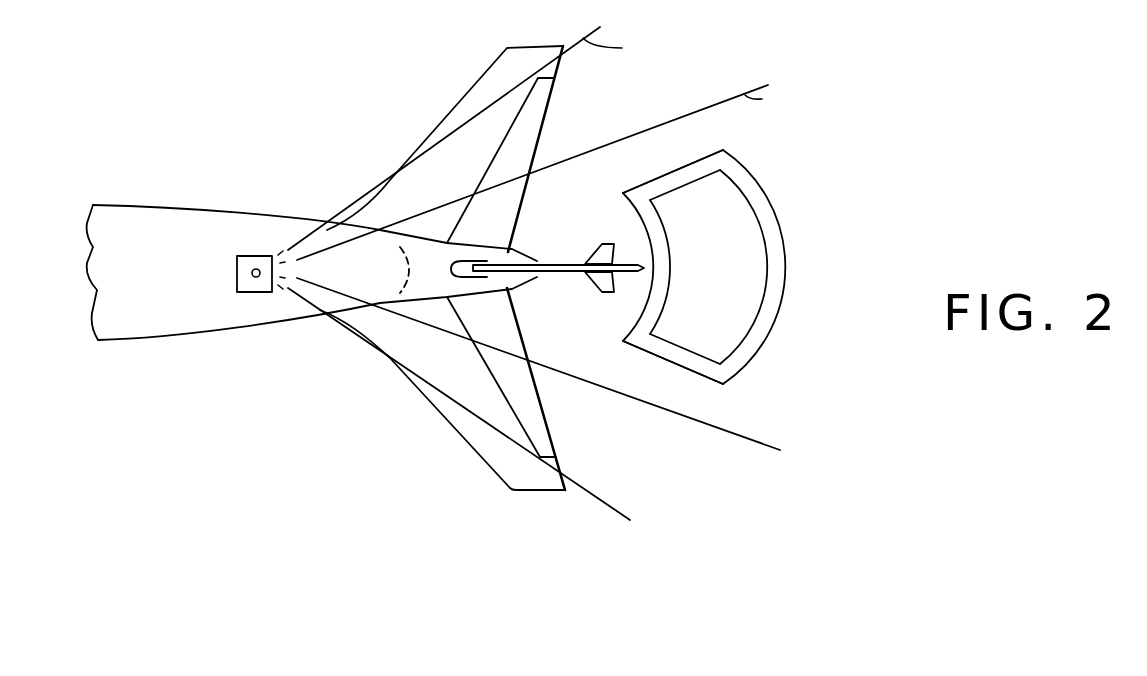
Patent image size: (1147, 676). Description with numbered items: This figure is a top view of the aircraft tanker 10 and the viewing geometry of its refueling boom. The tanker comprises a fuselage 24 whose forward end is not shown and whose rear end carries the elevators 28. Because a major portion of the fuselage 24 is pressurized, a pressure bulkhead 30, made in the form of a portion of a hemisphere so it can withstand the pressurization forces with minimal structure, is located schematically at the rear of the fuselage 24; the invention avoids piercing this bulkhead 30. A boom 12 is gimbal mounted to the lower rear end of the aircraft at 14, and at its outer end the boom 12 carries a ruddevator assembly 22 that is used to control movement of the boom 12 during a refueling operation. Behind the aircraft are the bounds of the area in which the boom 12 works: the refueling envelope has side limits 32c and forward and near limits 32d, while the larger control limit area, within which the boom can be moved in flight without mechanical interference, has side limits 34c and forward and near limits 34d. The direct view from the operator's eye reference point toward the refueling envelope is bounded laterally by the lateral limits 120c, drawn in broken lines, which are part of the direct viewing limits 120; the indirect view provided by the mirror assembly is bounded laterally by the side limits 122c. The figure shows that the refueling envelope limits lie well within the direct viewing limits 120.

The aircraft tanker 10 is at (248, 182).
The boom 12 is at (558, 266).
The gimbal mount 14 is at (453, 266).
The ruddevator assembly 22 is at (602, 283).
The fuselage 24 is at (152, 205).
The elevators 28 is at (533, 103).
The pressure bulkhead 30 is at (405, 272).
The side limits of the refueling envelope 32c is at (702, 177).
The forward and near limits of the refueling envelope 32d is at (637, 326).
The side limits of the control limit area 34c is at (643, 183).
The forward and near limits of the control limit area 34d is at (640, 218).
The direct view limits 120 is at (717, 272).
The lateral limits of the direct view 120c is at (678, 118).
The side limits of the indirect view 122c is at (707, 156).